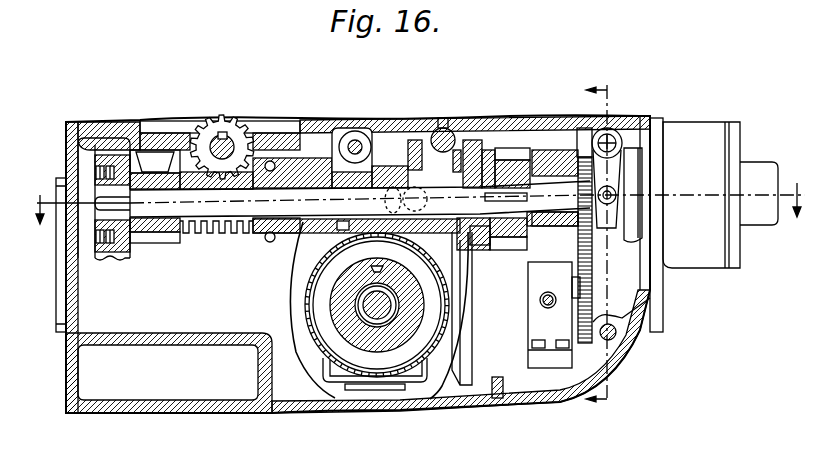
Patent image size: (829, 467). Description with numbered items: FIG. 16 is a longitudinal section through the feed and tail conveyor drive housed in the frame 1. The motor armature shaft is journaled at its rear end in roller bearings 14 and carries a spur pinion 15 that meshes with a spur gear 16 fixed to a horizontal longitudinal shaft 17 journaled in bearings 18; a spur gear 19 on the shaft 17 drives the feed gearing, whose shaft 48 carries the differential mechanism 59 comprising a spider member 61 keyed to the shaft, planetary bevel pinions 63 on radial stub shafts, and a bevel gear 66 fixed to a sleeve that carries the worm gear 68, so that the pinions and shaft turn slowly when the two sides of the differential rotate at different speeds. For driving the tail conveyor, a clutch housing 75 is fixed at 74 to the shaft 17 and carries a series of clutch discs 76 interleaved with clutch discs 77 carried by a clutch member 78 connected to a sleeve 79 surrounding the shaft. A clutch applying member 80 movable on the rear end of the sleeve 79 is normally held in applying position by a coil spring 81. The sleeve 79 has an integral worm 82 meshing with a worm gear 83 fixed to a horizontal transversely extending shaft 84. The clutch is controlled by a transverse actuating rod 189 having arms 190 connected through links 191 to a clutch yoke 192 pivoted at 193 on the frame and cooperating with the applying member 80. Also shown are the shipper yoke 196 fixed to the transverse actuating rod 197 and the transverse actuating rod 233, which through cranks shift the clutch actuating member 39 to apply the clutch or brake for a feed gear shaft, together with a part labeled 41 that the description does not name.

The frame 1 is at (291, 412).
The roller bearings 14 is at (416, 217).
The spur pinion 15 is at (104, 278).
The spur gear 16 is at (108, 150).
The horizontal shaft 17 is at (213, 208).
The bearings 18 is at (172, 228).
The spur gear 19 is at (508, 250).
The clutch actuating member 39 is at (640, 158).
The plate 41 is at (643, 168).
The shaft 48 is at (372, 303).
The differential mechanism 59 is at (325, 384).
The spider member 61 is at (378, 390).
The planetary bevel pinions 63 is at (338, 240).
The bevel gear 66 is at (316, 283).
The worm gear 68 is at (352, 318).
The fixing point 74 is at (526, 226).
The clutch housing 75 is at (528, 282).
The clutch discs 76 is at (467, 142).
The clutch discs 77 is at (485, 152).
The clutch member 78 is at (500, 150).
The sleeve 79 is at (316, 172).
The clutch applying member 80 is at (457, 150).
The coil spring 81 is at (405, 166).
The worm 82 is at (232, 230).
The worm gear 83 is at (226, 121).
The horizontal transversely extending shaft 84 is at (214, 140).
The actuating rod 189 is at (353, 132).
The arms 190 is at (364, 138).
The links 191 is at (393, 188).
The clutch yoke 192 is at (415, 140).
The pivot 193 is at (441, 128).
The shipper yoke 196 is at (617, 180).
The actuating rod 197 is at (611, 140).
The actuating rod 233 is at (616, 338).